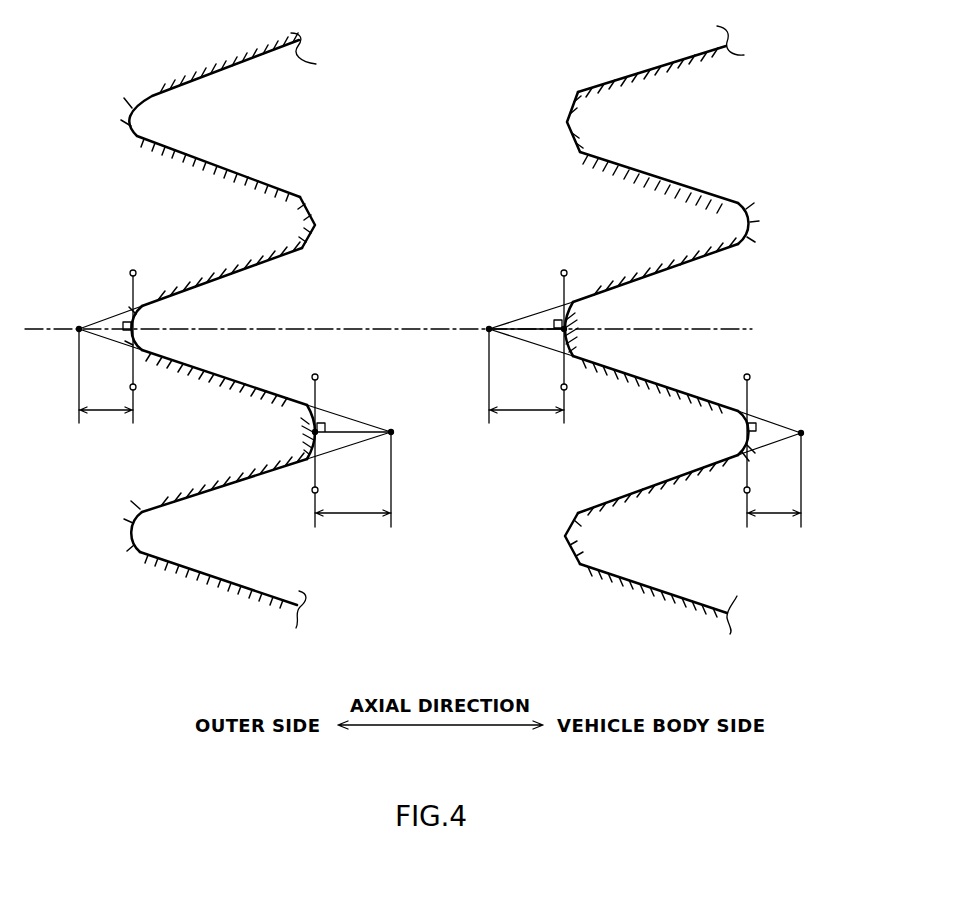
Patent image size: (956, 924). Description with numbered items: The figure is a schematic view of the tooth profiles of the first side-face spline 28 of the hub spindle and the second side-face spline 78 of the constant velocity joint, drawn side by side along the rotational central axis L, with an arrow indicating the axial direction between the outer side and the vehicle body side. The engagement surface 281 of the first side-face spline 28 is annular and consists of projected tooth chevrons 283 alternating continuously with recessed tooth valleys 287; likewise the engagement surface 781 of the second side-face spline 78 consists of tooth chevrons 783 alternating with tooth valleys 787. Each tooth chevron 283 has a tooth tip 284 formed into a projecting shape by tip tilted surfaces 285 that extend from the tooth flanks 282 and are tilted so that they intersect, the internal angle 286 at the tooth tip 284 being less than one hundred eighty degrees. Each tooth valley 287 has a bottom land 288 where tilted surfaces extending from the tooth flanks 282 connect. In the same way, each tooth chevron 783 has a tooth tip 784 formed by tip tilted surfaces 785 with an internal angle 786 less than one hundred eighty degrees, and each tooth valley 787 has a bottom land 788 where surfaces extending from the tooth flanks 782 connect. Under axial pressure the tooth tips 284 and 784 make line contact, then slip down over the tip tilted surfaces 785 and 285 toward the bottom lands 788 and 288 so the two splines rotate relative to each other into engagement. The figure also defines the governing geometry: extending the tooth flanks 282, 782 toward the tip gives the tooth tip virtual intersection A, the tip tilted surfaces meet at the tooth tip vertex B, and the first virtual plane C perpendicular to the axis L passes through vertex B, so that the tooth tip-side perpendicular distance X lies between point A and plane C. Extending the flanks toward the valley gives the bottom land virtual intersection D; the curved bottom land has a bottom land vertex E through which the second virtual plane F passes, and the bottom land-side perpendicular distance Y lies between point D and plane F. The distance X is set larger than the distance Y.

The first side-face spline 28 is at (153, 237).
The second side-face spline 78 is at (798, 244).
The engagement surface 281 is at (322, 320).
The tooth flanks 282 is at (252, 270).
The tooth chevron 283 is at (342, 469).
The tooth tip 284 is at (328, 453).
The tip tilted surfaces 285 is at (313, 375).
The internal angle 286 is at (302, 427).
The tooth valley 287 is at (155, 327).
The bottom land 288 is at (140, 338).
The engagement surface 781 is at (575, 331).
The tooth flanks 782 is at (630, 281).
The tooth chevron 783 is at (529, 281).
The tooth tip 784 is at (560, 340).
The tip tilted surfaces 785 is at (564, 270).
The internal angle 786 is at (578, 323).
The tooth valley 787 is at (719, 207).
The bottom land 788 is at (743, 226).
The tooth tip virtual intersection A is at (394, 432).
The tooth tip vertex B is at (320, 430).
The first virtual plane C is at (316, 396).
The bottom land virtual intersection D is at (78, 331).
The bottom land vertex E is at (125, 325).
The second virtual plane F is at (132, 284).
The rotational central axis L is at (366, 326).
The tooth tip-side perpendicular distance X is at (439, 450).
The bottom land-side perpendicular distance Y is at (440, 450).